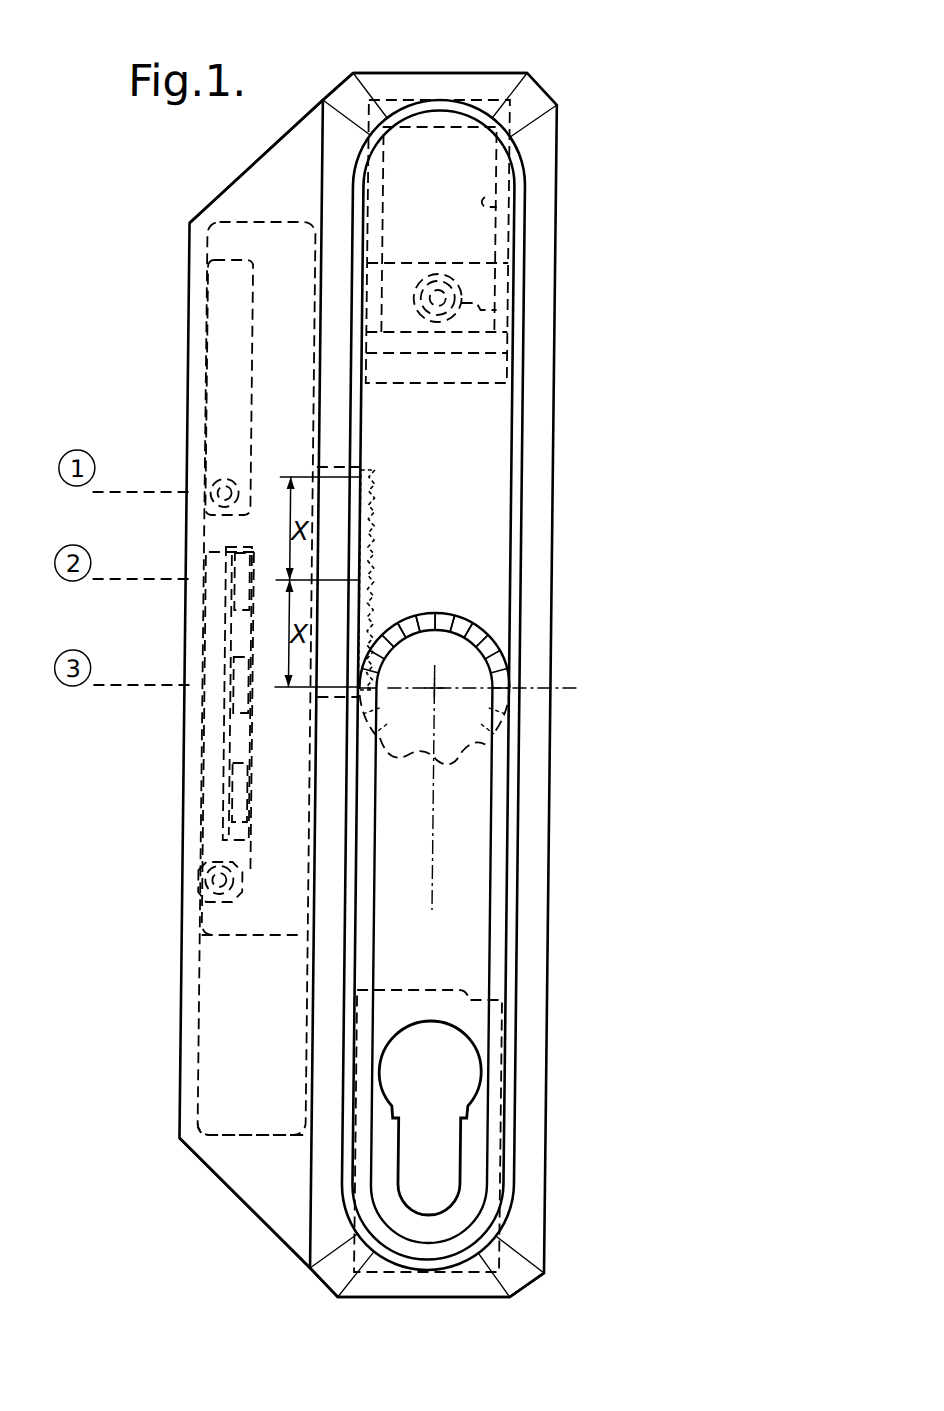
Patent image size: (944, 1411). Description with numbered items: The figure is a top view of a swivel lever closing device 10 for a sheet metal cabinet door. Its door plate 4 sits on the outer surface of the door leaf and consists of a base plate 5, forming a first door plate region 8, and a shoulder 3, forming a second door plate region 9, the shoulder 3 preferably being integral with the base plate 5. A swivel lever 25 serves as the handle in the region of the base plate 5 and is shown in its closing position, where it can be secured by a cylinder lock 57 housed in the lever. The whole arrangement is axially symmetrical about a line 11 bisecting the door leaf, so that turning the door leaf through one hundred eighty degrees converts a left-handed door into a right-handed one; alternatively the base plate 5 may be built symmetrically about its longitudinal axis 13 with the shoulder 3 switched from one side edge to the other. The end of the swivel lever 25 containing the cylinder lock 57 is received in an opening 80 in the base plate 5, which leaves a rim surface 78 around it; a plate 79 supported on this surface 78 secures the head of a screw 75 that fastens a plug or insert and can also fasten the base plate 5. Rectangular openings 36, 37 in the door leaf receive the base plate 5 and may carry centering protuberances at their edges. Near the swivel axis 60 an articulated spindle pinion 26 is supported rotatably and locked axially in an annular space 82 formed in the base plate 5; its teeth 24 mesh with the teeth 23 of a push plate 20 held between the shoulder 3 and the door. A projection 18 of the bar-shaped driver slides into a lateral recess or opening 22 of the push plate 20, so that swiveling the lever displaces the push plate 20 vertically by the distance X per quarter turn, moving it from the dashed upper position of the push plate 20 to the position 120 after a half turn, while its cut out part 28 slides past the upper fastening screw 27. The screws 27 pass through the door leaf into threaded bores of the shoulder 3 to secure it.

The swivel lever closing device 10 is at (458, 39).
The first door plate region 8 is at (514, 68).
The door plate 4 is at (323, 97).
The second door plate region 9 is at (236, 176).
The shoulder 3 is at (288, 1189).
The base plate 5 is at (498, 458).
The opening 36 is at (496, 382).
The surface 78 is at (507, 278).
The opening 80 is at (499, 207).
The screw 75 is at (465, 304).
The plate 79 is at (480, 322).
The teeth 23 is at (387, 514).
The articulated spindle pinion 26 is at (467, 660).
The teeth 24 is at (424, 613).
The swivel lever 25 is at (476, 817).
The line 11 is at (568, 689).
The longitudinal axis 13 is at (445, 905).
The swivel axis 60 is at (445, 690).
The annular space 82 is at (495, 762).
The opening 37 is at (521, 992).
The cylinder lock 57 is at (465, 1097).
The push plate 20 is at (265, 926).
The push plate displaced position 120 is at (239, 1112).
The cut out part 28 is at (226, 343).
The screws 27 is at (210, 483).
The projection 18 is at (213, 577).
The recess or opening 22 is at (235, 608).